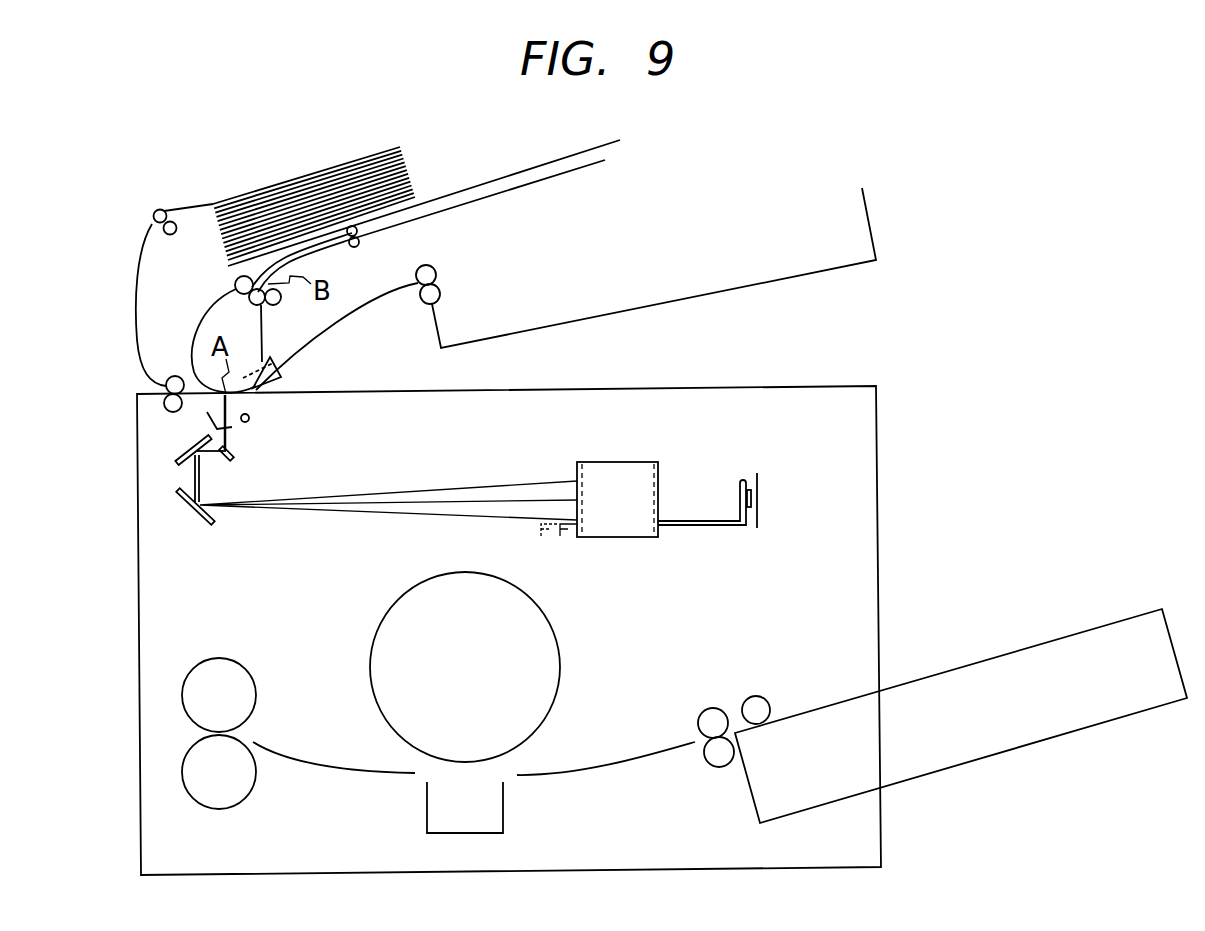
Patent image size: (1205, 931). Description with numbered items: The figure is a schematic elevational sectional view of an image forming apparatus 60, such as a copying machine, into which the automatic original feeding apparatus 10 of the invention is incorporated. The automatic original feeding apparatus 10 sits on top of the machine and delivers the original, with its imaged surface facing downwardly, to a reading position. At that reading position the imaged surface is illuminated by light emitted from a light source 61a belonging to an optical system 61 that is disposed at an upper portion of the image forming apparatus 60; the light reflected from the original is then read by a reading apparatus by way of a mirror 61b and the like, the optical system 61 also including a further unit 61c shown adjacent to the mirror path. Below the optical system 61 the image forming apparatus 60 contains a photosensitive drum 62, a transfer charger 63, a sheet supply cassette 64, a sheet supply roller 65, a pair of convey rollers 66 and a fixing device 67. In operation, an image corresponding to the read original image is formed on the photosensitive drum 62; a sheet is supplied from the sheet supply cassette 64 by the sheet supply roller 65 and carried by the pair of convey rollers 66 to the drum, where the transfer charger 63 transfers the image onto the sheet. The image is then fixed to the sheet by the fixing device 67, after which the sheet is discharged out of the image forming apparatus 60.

The automatic original feeding apparatus 10 is at (473, 184).
The image forming apparatus 60 is at (778, 386).
The optical system 61 is at (770, 400).
The light source 61a is at (250, 419).
The mirror 61b is at (177, 462).
The laser light source unit 61c is at (627, 470).
The photosensitive drum 62 is at (545, 667).
The transfer charger 63 is at (483, 815).
The sheet supply cassette 64 is at (965, 670).
The sheet supply roller 65 is at (765, 698).
The pair of convey rollers 66 is at (715, 716).
The fixing device 67 is at (235, 677).